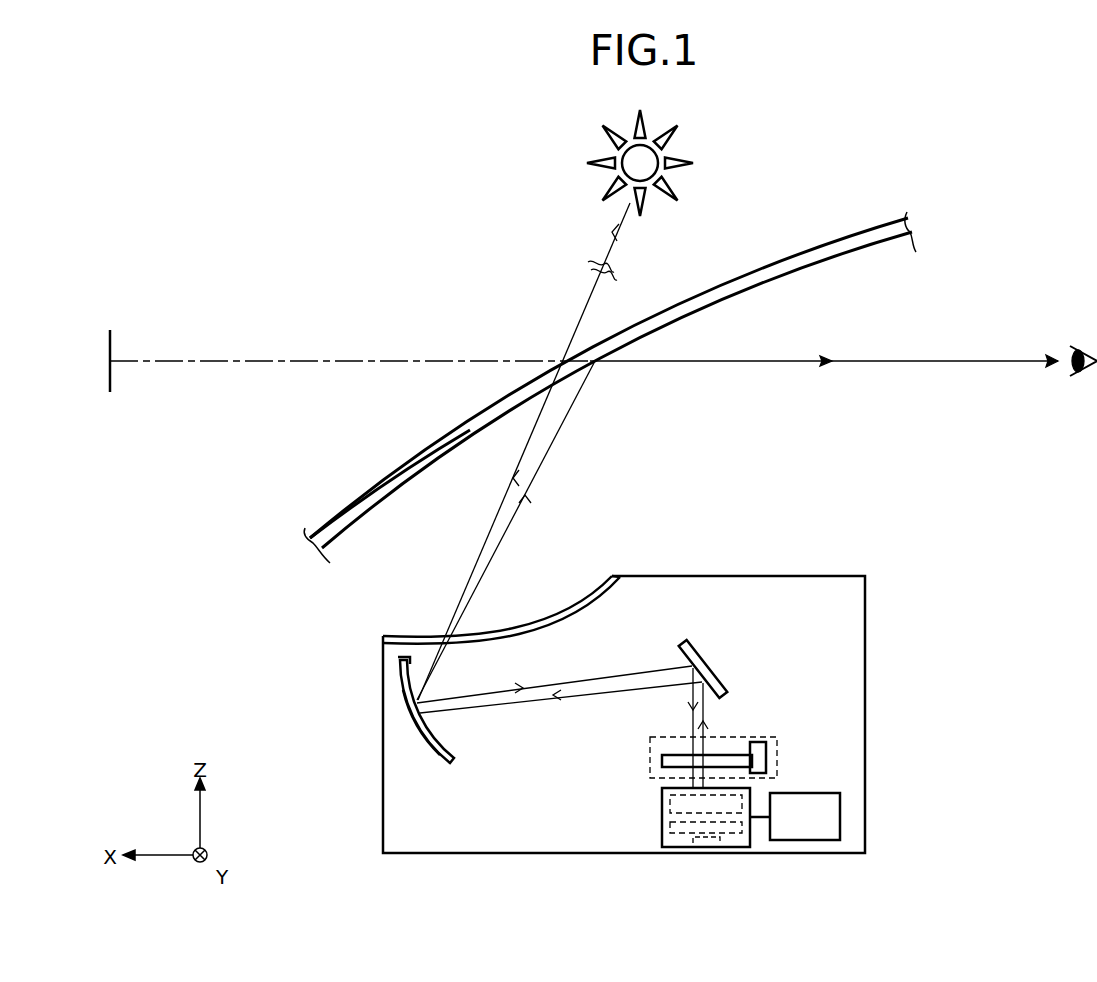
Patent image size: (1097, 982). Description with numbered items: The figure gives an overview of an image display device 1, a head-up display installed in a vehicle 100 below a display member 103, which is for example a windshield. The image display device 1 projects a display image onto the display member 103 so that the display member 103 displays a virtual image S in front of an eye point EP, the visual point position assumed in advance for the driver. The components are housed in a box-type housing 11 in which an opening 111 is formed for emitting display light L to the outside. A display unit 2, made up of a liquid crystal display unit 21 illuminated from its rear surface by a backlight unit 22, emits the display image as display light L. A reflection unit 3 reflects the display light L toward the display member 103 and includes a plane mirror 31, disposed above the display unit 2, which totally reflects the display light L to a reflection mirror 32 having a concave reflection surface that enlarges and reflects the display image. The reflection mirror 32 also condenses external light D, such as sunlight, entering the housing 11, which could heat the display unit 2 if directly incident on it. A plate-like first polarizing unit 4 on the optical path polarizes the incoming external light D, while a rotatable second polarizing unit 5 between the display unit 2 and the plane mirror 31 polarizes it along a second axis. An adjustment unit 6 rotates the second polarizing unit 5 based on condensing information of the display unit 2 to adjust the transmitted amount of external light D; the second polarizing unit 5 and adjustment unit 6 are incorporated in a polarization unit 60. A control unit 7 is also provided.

The vehicle 100 is at (862, 197).
The display member 103 is at (358, 498).
The image display device 1 is at (589, 700).
The housing 11 is at (382, 842).
The opening 111 is at (617, 588).
The first polarizing unit 4 is at (573, 610).
The reflection unit 3 is at (452, 764).
The reflection mirror 32 is at (428, 750).
The plane mirror 31 is at (702, 660).
The display unit 2 is at (677, 848).
The liquid crystal display unit 21 is at (661, 805).
The backlight unit 22 is at (661, 828).
The second polarizing unit 5 is at (660, 760).
The adjustment unit 6 is at (766, 757).
The polarization unit 60 is at (648, 752).
The control unit 7 is at (808, 841).
The external light D is at (473, 565).
The display light L is at (708, 706).
The virtual image S is at (110, 348).
The eye point EP is at (1071, 352).